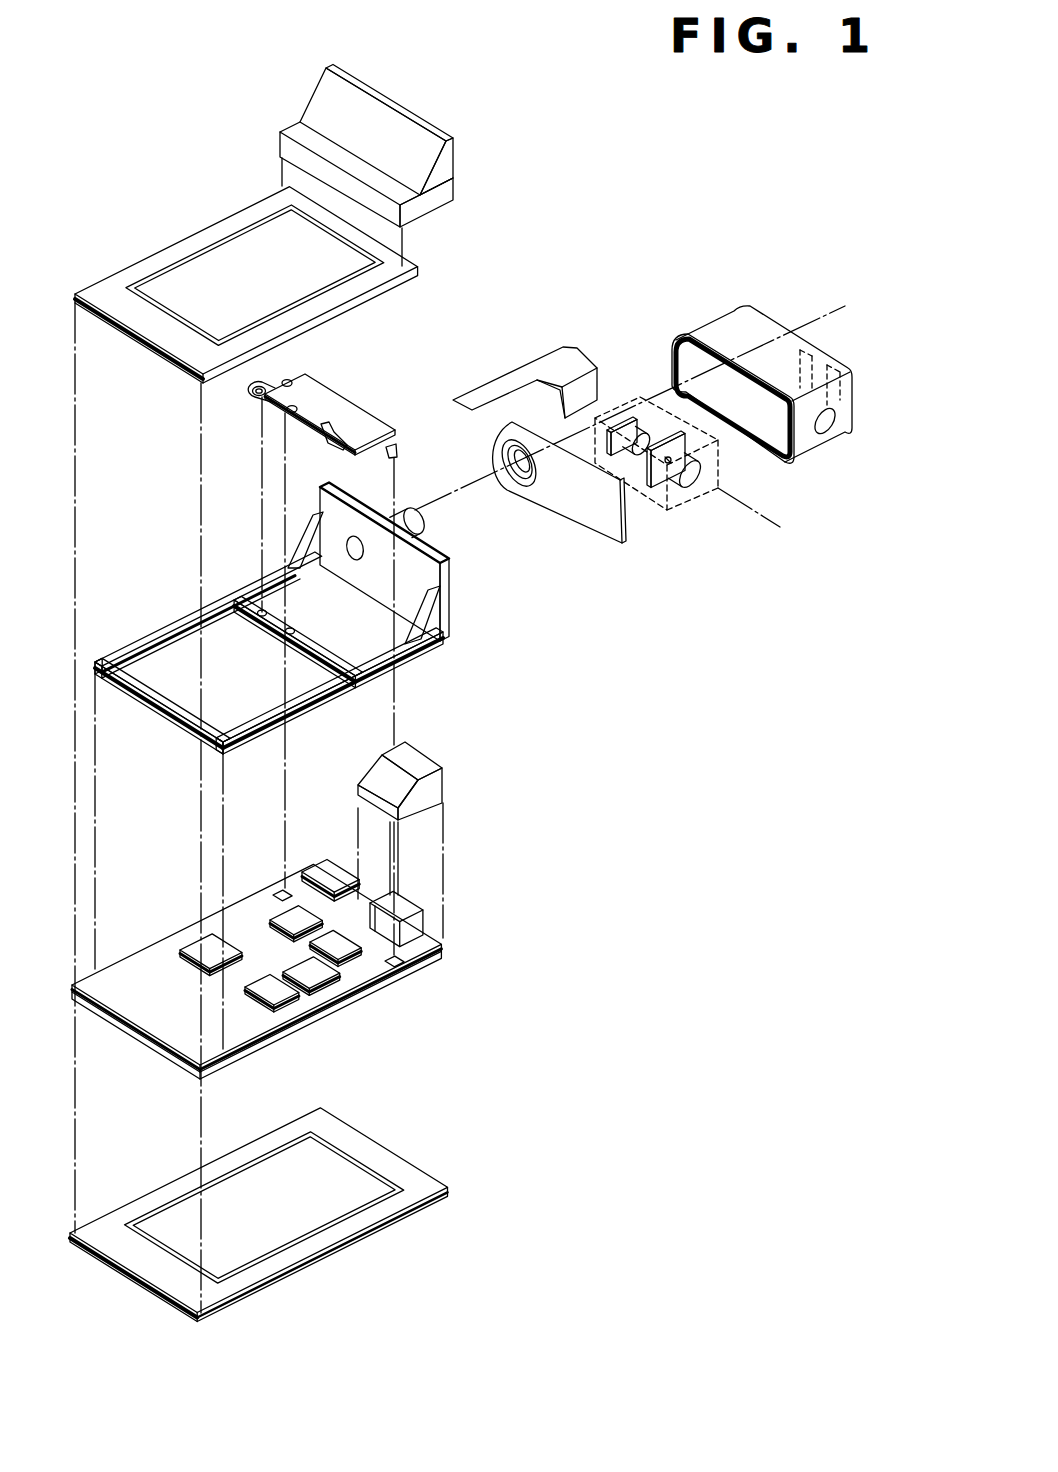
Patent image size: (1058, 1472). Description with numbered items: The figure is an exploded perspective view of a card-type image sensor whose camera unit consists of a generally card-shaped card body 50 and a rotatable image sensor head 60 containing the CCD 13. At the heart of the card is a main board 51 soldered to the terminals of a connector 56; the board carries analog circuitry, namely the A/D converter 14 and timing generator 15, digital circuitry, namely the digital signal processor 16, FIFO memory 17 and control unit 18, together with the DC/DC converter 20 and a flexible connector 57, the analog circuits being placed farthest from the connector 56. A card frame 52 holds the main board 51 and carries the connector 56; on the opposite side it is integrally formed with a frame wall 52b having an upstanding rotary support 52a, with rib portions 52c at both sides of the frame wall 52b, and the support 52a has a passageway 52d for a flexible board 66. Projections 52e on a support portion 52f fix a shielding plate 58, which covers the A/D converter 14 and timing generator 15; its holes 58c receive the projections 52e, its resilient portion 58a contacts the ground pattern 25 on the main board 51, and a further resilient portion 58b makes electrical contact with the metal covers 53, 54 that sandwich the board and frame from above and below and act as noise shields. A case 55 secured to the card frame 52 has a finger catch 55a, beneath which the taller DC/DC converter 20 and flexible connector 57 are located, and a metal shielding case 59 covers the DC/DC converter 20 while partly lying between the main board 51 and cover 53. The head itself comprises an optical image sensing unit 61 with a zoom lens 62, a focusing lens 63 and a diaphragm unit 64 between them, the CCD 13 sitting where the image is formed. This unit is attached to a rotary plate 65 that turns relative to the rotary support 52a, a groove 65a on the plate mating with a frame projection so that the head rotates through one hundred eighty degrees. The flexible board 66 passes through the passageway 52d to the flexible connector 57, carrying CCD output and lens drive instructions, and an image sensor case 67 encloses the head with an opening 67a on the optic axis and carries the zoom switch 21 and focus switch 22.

The CCD 13 is at (620, 417).
The A/D converter 14 is at (273, 915).
The timing generator 15 is at (362, 989).
The digital signal processor 16 is at (205, 935).
The FIFO memory 17 is at (323, 980).
The control unit 18 is at (283, 1000).
The DC/DC converter 20 is at (413, 907).
The zoom switch 21 is at (837, 380).
The focus switch 22 is at (807, 348).
The ground pattern 25 is at (280, 892).
The card body 50 is at (392, 1242).
The main board 51 is at (150, 970).
The card frame 52 is at (316, 610).
The rotary support 52a is at (424, 522).
The frame wall 52b is at (429, 553).
The rib portions 52c is at (457, 640).
The passageway 52d is at (349, 540).
The projections 52e is at (262, 616).
The support portion 52f is at (300, 650).
The cover 53 is at (215, 258).
The cover 54 is at (402, 1165).
The case 55 is at (375, 146).
The finger catch 55a is at (313, 110).
The connector 56 is at (157, 1030).
The flexible connector 57 is at (333, 873).
The shielding plate 58 is at (311, 403).
The resilient portion 58a is at (290, 380).
The resilient portion 58b is at (325, 428).
The holes 58c is at (256, 396).
The shielding case 59 is at (434, 787).
The image sensor head 60 is at (679, 463).
The optical image sensing unit 61 is at (723, 462).
The zoom lens 62 is at (697, 485).
The focusing lens 63 is at (643, 427).
The diaphragm unit 64 is at (662, 500).
The rotary plate 65 is at (528, 499).
The groove 65a is at (505, 454).
The flexible board 66 is at (523, 368).
The image sensor case 67 is at (774, 393).
The opening 67a is at (825, 437).